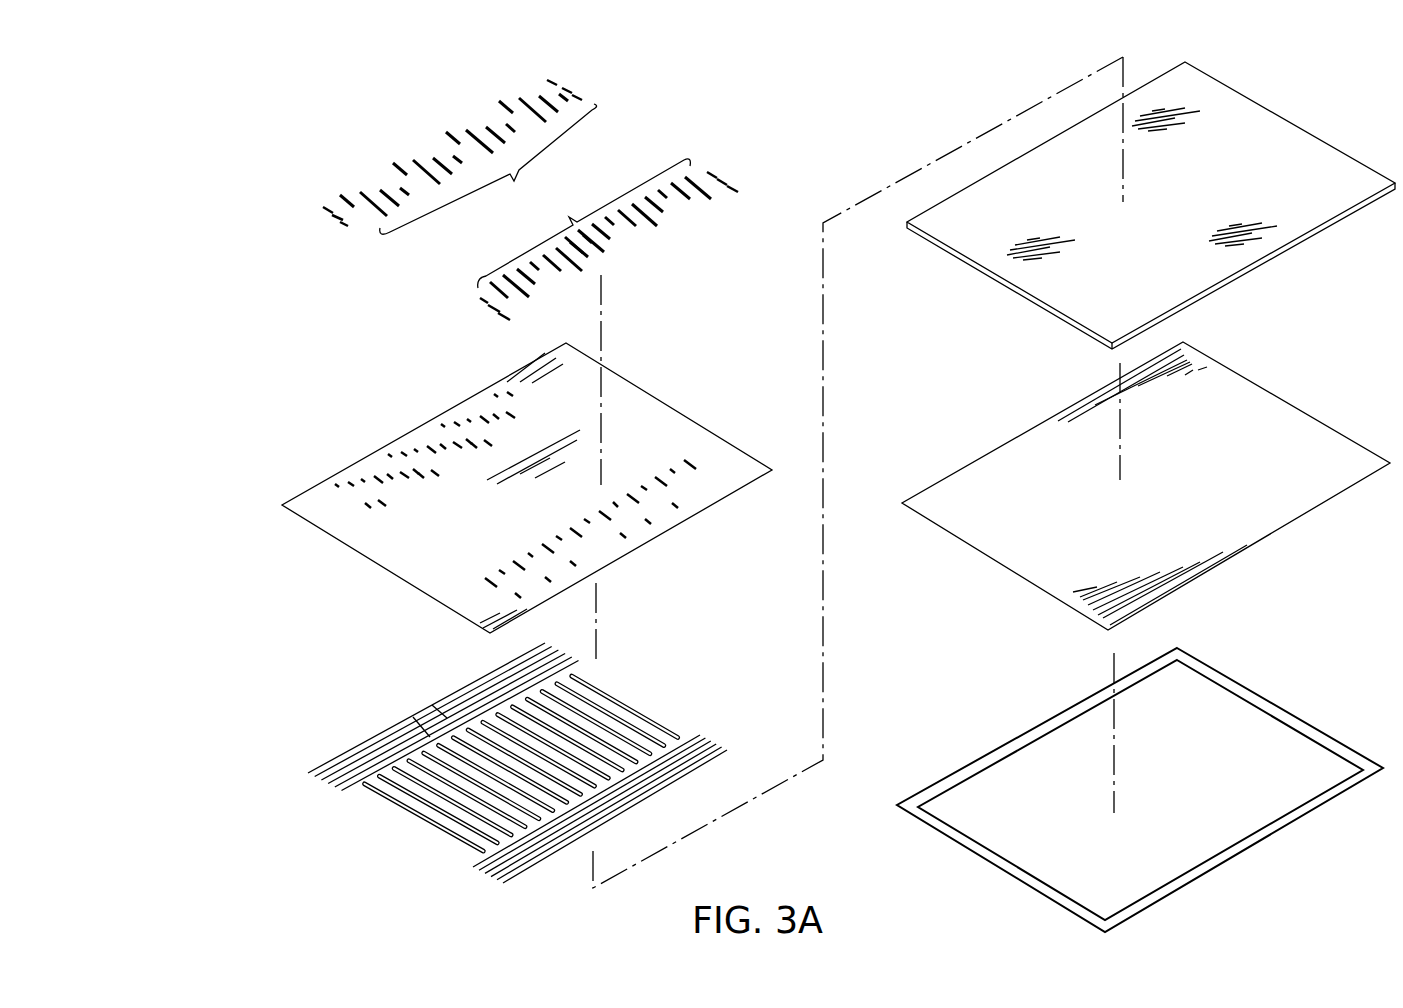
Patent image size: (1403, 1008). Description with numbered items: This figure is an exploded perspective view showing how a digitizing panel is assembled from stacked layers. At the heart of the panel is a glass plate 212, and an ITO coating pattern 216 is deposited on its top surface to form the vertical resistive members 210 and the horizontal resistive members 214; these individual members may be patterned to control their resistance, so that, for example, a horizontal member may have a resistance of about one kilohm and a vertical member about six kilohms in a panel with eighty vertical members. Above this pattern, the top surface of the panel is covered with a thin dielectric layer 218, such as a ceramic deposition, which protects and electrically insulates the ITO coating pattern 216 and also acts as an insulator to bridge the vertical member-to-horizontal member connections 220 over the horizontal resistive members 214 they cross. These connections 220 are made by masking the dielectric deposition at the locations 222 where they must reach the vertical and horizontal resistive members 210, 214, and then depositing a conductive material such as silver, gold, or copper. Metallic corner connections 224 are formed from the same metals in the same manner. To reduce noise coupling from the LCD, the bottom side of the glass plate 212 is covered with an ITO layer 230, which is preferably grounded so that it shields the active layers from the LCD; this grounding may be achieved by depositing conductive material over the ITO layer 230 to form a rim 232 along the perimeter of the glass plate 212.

The vertical resistive members 210 is at (487, 790).
The glass plate 212 is at (1018, 270).
The horizontal resistive members 214 is at (433, 703).
The ITO coating pattern 216 is at (518, 763).
The dielectric layer 218 is at (615, 425).
The vertical member-to-horizontal member connections 220 is at (532, 210).
The locations 222 is at (493, 440).
The metallic corner connections 224 is at (550, 80).
The ITO layer 230 is at (1048, 487).
The rim 232 is at (1065, 717).